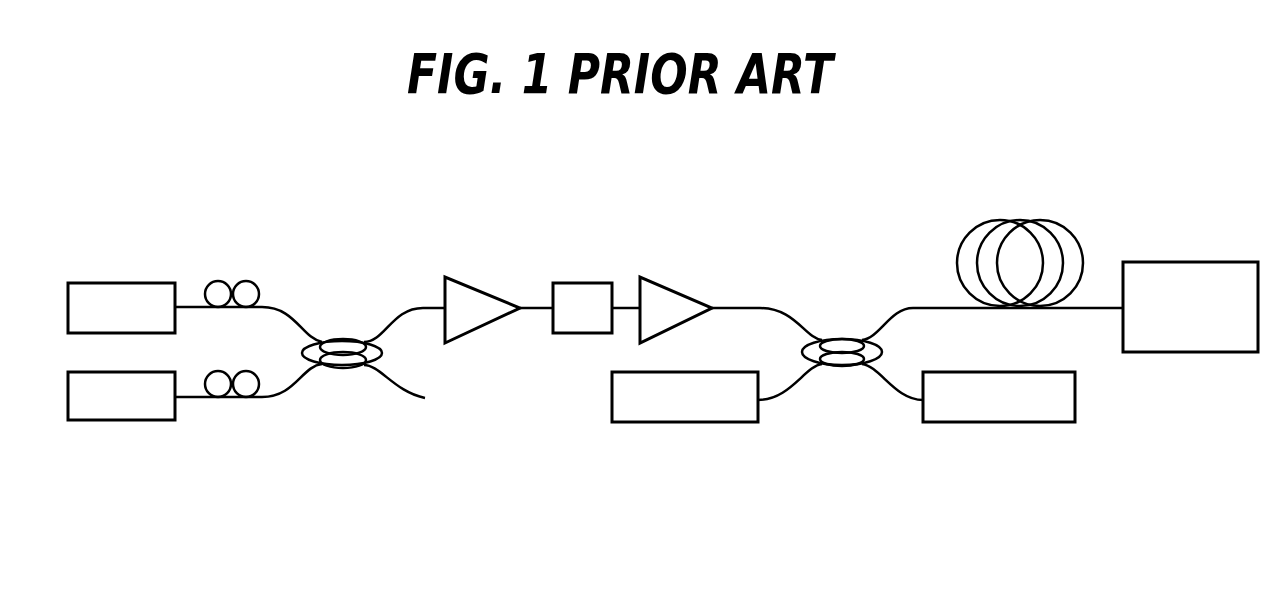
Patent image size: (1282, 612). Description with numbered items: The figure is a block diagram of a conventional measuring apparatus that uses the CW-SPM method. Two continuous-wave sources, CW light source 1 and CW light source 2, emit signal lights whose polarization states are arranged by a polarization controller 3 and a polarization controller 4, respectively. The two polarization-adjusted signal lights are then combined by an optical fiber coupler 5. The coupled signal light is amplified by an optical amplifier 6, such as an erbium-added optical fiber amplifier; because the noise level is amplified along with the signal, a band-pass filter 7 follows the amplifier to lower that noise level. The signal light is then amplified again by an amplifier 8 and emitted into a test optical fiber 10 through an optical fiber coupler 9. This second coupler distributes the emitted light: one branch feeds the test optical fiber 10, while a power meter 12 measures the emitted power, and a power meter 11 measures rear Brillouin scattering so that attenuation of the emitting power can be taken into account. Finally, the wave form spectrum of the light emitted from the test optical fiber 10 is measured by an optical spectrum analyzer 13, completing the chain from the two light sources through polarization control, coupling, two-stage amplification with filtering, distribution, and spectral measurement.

The CW light source 1 is at (118, 283).
The CW light source 2 is at (112, 420).
The polarization controller 3 is at (256, 281).
The polarization controller 4 is at (247, 390).
The optical fiber coupler 5 is at (352, 382).
The optical amplifier 6 is at (476, 283).
The band-pass filter 7 is at (587, 283).
The amplifier 8 is at (690, 292).
The optical fiber coupler 9 is at (836, 382).
The test optical fiber 10 is at (1072, 235).
The power meter 11 is at (700, 422).
The power meter 12 is at (1023, 422).
The optical spectrum analyzer 13 is at (1208, 352).